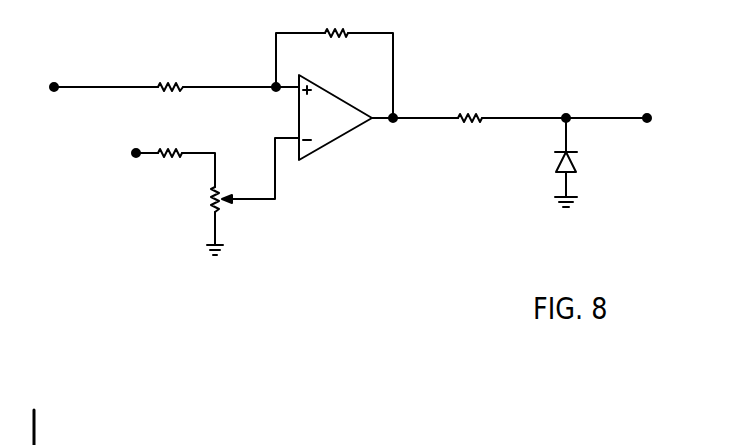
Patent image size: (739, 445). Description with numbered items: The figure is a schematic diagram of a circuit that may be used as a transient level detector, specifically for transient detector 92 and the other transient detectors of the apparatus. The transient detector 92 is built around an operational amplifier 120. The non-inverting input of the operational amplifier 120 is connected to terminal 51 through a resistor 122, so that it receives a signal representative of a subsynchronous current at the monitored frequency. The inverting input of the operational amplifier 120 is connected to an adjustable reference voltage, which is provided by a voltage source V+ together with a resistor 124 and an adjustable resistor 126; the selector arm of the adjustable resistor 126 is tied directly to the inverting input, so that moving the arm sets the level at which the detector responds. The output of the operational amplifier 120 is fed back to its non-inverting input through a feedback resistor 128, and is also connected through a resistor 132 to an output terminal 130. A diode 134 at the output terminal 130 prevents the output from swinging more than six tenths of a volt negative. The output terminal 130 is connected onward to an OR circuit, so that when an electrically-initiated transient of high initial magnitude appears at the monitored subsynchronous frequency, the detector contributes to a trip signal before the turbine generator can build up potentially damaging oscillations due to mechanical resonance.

The terminal 51 is at (54, 86).
The transient detector 92 is at (398, 27).
The operational amplifier 120 is at (326, 143).
The resistor 122 is at (174, 84).
The resistor 124 is at (180, 150).
The adjustable resistor 126 is at (213, 195).
The feedback resistor 128 is at (345, 30).
The output terminal 130 is at (647, 117).
The resistor 132 is at (476, 115).
The diode 134 is at (578, 159).